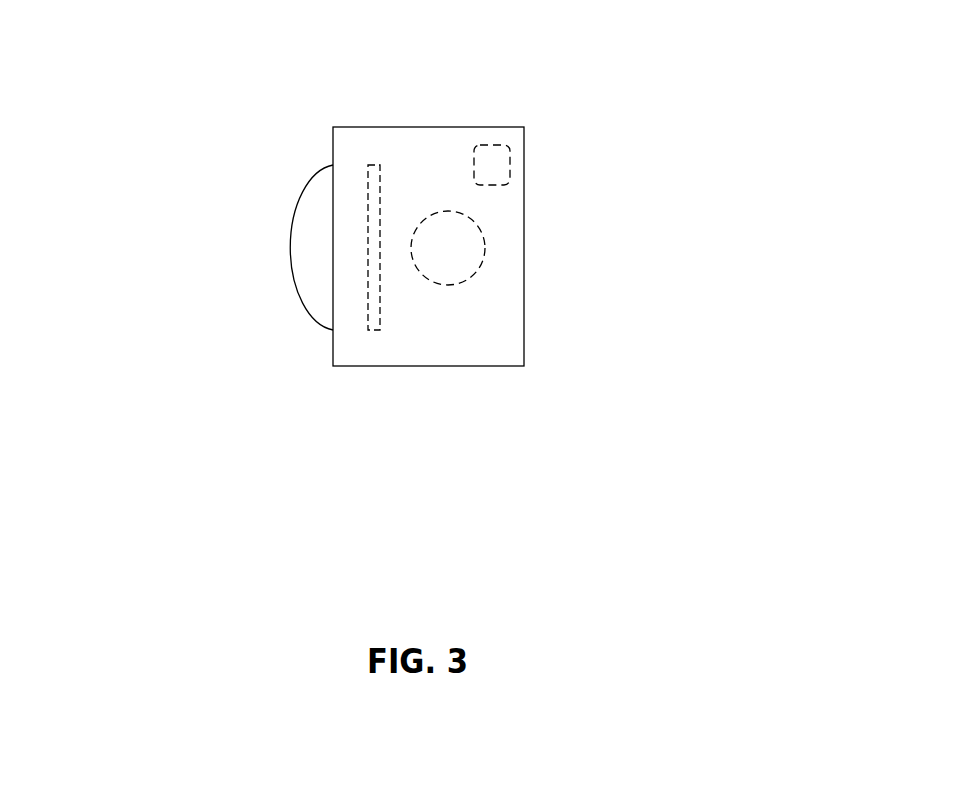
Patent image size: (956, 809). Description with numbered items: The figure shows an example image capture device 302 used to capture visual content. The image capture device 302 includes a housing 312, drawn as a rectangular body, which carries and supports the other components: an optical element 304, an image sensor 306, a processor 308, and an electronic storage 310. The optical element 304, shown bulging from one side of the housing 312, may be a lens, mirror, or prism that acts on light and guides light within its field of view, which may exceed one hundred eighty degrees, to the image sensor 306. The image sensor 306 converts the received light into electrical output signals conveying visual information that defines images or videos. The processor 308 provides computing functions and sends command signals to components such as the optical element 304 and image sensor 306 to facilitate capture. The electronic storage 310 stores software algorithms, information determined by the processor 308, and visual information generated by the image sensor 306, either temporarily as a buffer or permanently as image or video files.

The image capture device 302 is at (227, 149).
The optical element 304 is at (298, 305).
The image sensor 306 is at (377, 163).
The processor 308 is at (452, 285).
The electronic storage 310 is at (508, 168).
The housing 312 is at (452, 367).